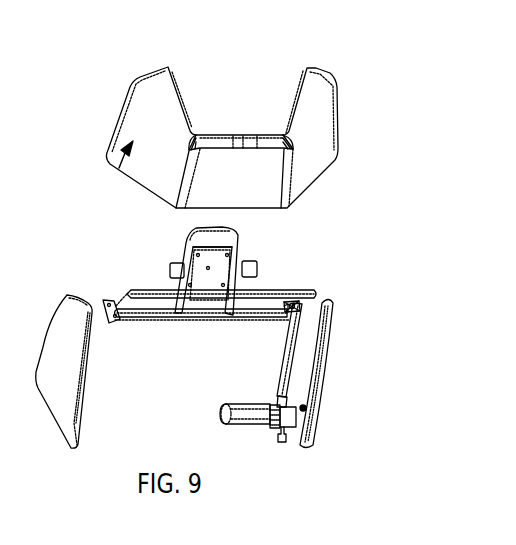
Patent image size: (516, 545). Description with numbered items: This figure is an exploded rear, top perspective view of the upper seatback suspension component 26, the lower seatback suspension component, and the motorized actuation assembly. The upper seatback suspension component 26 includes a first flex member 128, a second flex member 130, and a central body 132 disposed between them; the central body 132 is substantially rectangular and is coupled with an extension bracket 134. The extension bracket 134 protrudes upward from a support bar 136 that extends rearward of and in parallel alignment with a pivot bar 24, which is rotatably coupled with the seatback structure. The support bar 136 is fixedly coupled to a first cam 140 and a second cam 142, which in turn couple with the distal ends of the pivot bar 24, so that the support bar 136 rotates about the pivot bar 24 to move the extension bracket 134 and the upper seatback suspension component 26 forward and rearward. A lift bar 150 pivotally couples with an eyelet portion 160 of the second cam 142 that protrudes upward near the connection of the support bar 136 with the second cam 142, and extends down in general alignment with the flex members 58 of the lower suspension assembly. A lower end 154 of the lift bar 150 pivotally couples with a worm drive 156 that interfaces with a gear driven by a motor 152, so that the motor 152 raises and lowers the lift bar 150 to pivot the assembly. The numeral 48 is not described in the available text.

The pivot bar 24 is at (278, 293).
The upper seatback suspension component 26 is at (118, 172).
The upper seatback assembly 48 is at (184, 255).
The flex members 58 is at (52, 378).
The first flex member 128 is at (142, 107).
The second flex member 130 is at (322, 97).
The central body 132 is at (248, 165).
The extension bracket 134 is at (225, 242).
The support bar 136 is at (158, 318).
The first cam 140 is at (106, 326).
The second cam 142 is at (282, 304).
The lift bar 150 is at (298, 333).
The motor 152 is at (245, 412).
The lower end 154 is at (294, 378).
The worm drive 156 is at (286, 441).
The eyelet portion 160 is at (300, 303).